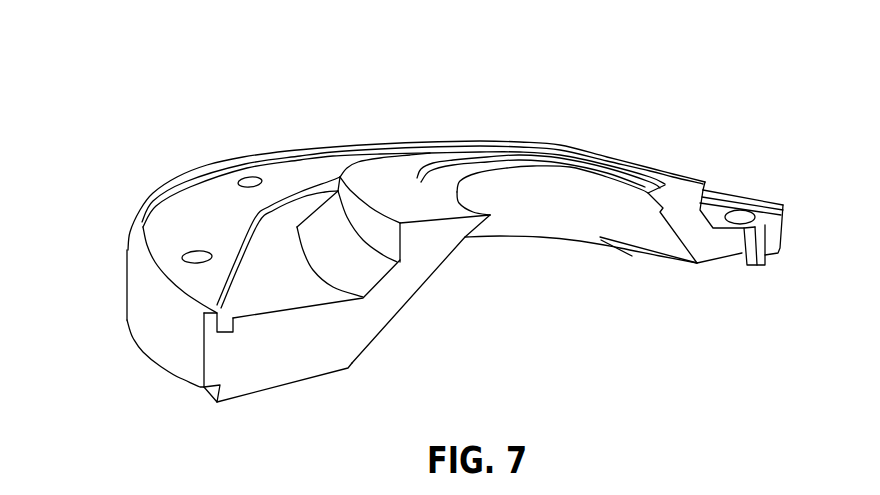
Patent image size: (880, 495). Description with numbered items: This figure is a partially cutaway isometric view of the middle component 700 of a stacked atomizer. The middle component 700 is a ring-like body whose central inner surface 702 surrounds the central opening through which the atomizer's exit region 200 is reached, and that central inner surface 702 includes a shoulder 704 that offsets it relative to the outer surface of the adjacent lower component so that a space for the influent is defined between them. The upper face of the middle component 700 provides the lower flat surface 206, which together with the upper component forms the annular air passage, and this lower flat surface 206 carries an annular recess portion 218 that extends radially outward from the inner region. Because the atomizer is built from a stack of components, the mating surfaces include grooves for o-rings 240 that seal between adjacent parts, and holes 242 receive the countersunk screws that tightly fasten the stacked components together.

The middle component 700 is at (133, 130).
The holes 242 is at (281, 183).
The lower flat surface 206 is at (402, 180).
The annular recess portion 218 is at (452, 178).
The exit region 200 is at (752, 228).
The o-rings 240 is at (217, 328).
The shoulder 704 is at (407, 243).
The central inner surface 702 is at (568, 202).